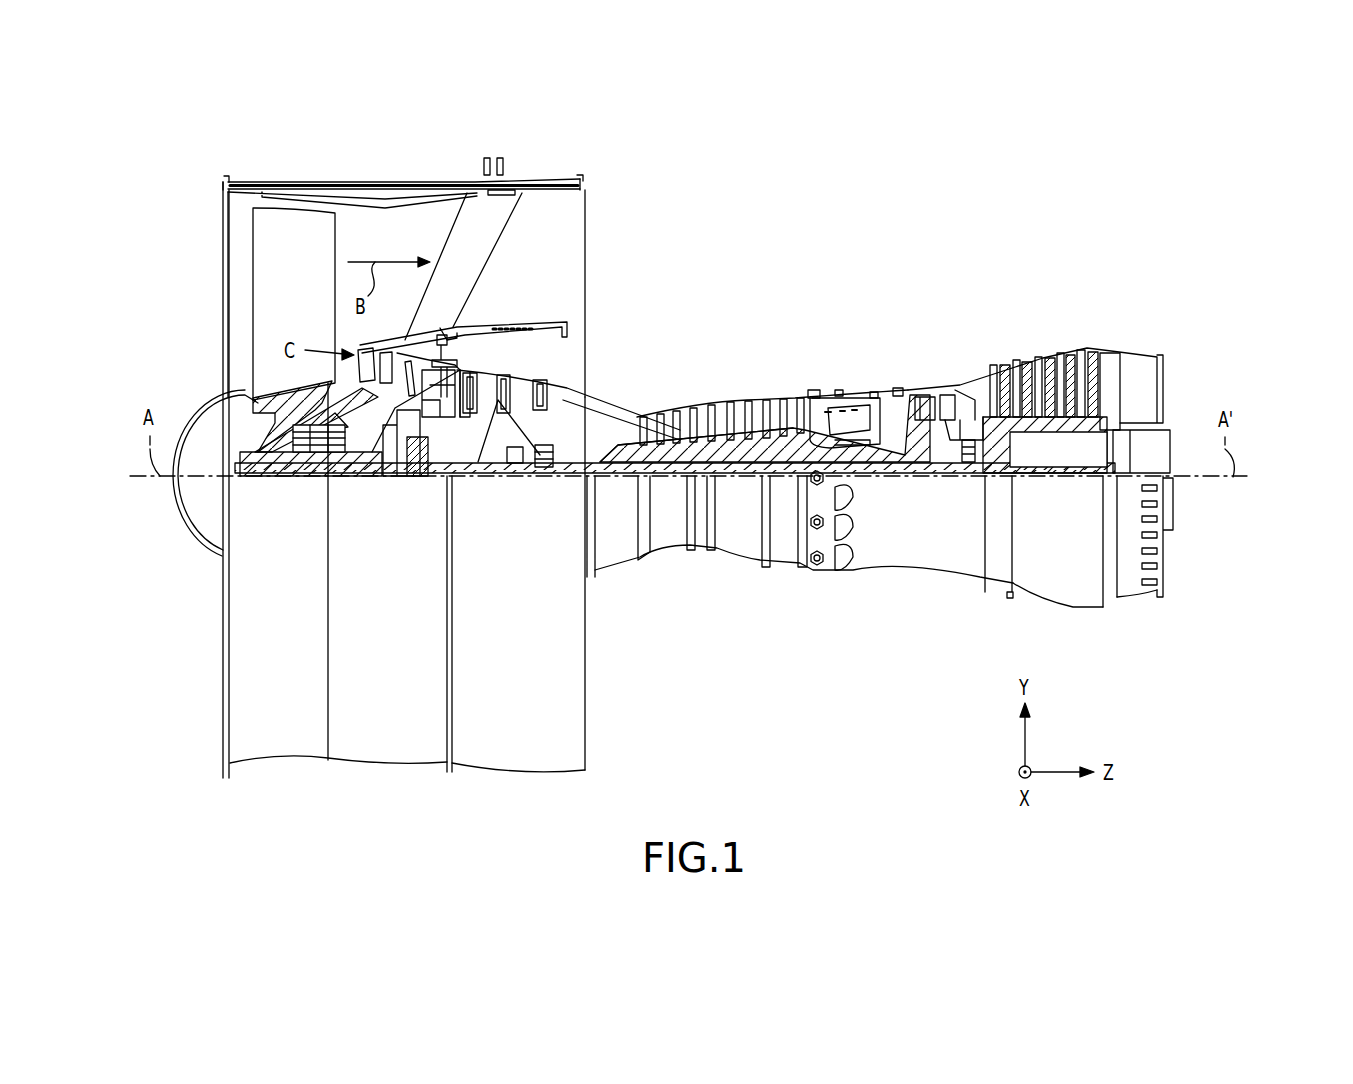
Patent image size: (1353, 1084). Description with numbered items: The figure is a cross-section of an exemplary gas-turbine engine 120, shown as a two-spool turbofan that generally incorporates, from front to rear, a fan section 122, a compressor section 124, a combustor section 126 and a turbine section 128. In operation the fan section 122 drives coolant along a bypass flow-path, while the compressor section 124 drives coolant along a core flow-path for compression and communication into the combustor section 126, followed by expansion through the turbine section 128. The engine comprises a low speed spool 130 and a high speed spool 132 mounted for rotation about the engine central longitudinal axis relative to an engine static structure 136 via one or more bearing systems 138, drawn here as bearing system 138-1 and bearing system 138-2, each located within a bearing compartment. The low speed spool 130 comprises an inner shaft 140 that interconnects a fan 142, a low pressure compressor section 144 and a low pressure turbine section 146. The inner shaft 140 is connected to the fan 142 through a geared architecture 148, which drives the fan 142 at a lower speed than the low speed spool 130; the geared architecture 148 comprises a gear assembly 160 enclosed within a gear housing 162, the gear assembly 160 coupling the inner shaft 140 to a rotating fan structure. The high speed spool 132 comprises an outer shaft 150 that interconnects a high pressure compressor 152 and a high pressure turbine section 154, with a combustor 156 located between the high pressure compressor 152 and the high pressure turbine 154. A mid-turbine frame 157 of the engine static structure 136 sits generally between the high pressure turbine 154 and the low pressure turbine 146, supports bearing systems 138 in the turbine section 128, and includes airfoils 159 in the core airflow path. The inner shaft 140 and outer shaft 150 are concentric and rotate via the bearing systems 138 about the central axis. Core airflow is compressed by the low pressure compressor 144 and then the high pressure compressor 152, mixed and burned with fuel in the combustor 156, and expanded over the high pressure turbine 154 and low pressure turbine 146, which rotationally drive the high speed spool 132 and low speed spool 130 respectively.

The gas-turbine engine 120 is at (930, 200).
The fan section 122 is at (428, 163).
The compressor section 124 is at (453, 290).
The combustor section 126 is at (908, 290).
The turbine section 128 is at (1108, 290).
The low speed spool 130 is at (734, 488).
The high speed spool 132 is at (790, 430).
The engine static structure 136 is at (360, 785).
The bearing system 138 is at (963, 460).
The bearing system 138-1 is at (303, 452).
The bearing system 138-2 is at (547, 467).
The inner shaft 140 is at (605, 477).
The fan 142 is at (306, 320).
The low pressure compressor section 144 is at (520, 378).
The low pressure turbine section 146 is at (1043, 370).
The geared architecture 148 is at (412, 487).
The outer shaft 150 is at (897, 465).
The high pressure compressor 152 is at (747, 437).
The high pressure turbine section 154 is at (923, 403).
The combustor 156 is at (847, 420).
The mid-turbine frame 157 is at (957, 417).
The airfoils 159 is at (967, 433).
The gear assembly 160 is at (412, 455).
The gear housing 162 is at (415, 423).